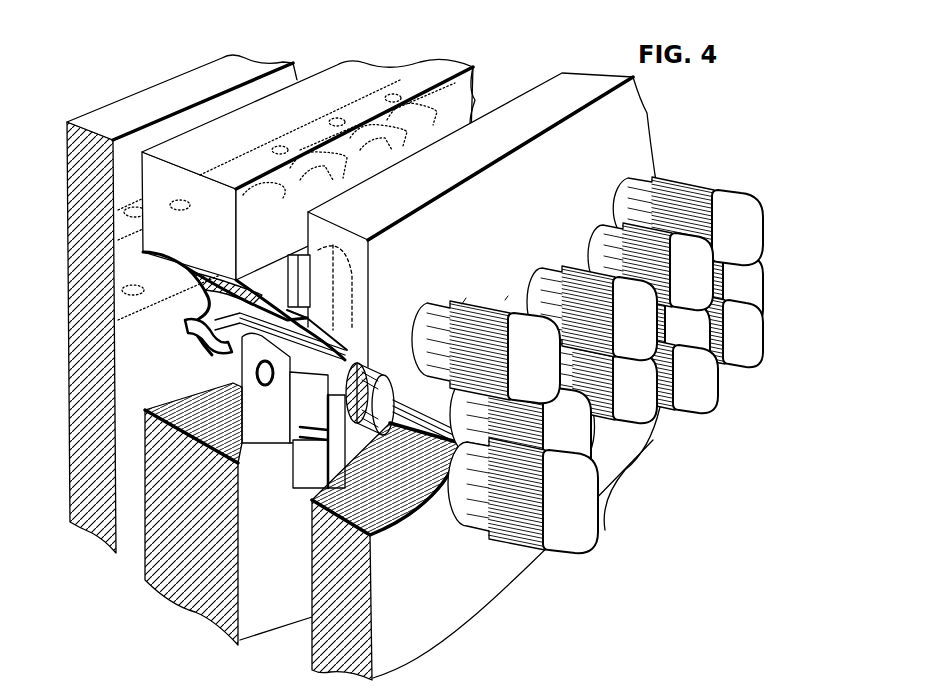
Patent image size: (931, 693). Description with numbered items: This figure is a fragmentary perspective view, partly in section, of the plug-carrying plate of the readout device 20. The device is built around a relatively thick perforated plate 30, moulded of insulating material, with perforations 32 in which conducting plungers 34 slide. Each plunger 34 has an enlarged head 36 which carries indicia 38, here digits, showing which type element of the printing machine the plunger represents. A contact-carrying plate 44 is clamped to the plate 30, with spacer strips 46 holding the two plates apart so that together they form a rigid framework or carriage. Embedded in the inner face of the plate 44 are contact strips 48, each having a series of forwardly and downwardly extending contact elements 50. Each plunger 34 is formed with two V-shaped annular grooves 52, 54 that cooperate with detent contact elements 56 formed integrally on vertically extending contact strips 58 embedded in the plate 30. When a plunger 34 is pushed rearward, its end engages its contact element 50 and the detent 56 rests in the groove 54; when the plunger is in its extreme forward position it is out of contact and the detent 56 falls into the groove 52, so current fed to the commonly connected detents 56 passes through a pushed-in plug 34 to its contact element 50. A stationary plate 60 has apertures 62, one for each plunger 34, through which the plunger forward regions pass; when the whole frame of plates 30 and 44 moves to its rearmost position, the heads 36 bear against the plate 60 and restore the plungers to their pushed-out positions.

The readout device 20 is at (548, 161).
The perforated plate 30 is at (260, 557).
The perforations 32 is at (466, 300).
The plunger 34 is at (510, 330).
The enlarged head 36 is at (505, 300).
The indicia 38 is at (596, 507).
The contact-carrying plate 44 is at (90, 400).
The spacer strips 46 is at (308, 159).
The contact strips 48 is at (332, 107).
The contact elements 50 is at (300, 197).
The annular groove 52 is at (352, 362).
The annular groove 54 is at (390, 378).
The detent contact elements 56 is at (312, 456).
The contact strips 58 is at (266, 388).
The stationary plate 60 is at (360, 620).
The apertures 62 is at (453, 477).